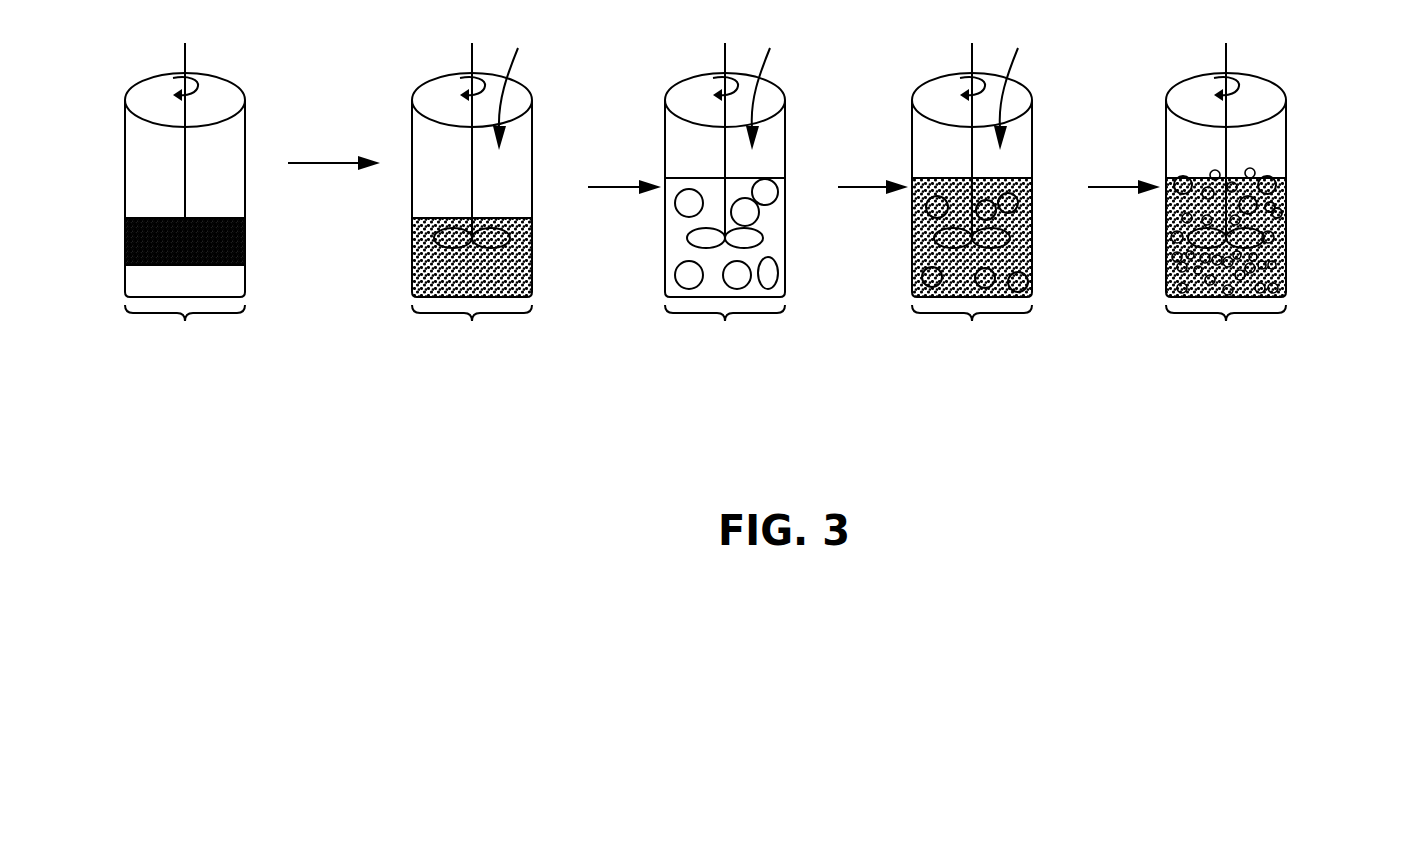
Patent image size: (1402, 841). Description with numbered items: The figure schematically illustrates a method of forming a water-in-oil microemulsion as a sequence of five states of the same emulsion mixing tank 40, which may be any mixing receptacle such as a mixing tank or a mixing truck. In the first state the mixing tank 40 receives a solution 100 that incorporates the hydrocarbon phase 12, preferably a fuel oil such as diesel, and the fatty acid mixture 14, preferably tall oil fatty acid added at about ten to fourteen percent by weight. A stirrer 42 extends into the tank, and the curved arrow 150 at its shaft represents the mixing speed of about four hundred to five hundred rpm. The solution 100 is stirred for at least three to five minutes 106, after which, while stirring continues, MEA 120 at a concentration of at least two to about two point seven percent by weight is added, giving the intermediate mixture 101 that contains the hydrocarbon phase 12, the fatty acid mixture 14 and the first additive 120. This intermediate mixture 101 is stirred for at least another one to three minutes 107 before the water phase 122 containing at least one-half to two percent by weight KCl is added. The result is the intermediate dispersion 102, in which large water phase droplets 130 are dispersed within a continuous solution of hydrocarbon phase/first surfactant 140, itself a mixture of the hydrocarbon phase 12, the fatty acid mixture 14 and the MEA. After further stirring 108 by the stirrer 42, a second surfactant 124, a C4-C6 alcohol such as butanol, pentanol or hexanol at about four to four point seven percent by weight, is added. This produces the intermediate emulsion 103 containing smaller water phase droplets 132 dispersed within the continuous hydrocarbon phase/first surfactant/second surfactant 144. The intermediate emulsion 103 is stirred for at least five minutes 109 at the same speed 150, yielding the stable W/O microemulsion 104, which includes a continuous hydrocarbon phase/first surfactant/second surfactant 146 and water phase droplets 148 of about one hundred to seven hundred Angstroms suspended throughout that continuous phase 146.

The hydrocarbon phase 12 is at (359, 241).
The fatty acid mixture 14 is at (361, 257).
The emulsion mixing tank 40 is at (675, 185).
The stirrer 42 is at (660, 265).
The solution 100 is at (185, 328).
The intermediate mixture 101 is at (472, 328).
The intermediate dispersion 102 is at (725, 328).
The intermediate emulsion 103 is at (972, 328).
The W/O microemulsion 104 is at (1226, 328).
The stirring period of at least three to five minutes 106 is at (334, 153).
The stirring period of at least another one to three minutes 107 is at (624, 177).
The stirring period of at least another one to several minutes 108 is at (873, 177).
The stirring period of at least five minutes 109 is at (1124, 177).
The MEA first additive 120 is at (516, 86).
The water phase containing KCl 122 is at (768, 86).
The second surfactant 124 is at (1016, 86).
The large water phase droplets 130 is at (761, 234).
The smaller water phase droplets 132 is at (1010, 209).
The hydrocarbon phase/first surfactant 140 is at (756, 214).
The hydrocarbon phase/first surfactant/second surfactant 144 is at (1003, 237).
The continuous hydrocarbon phase/first surfactant/second surfactant 146 is at (1259, 232).
The water phase droplets 148 is at (1270, 203).
The mixing speed 150 is at (651, 140).